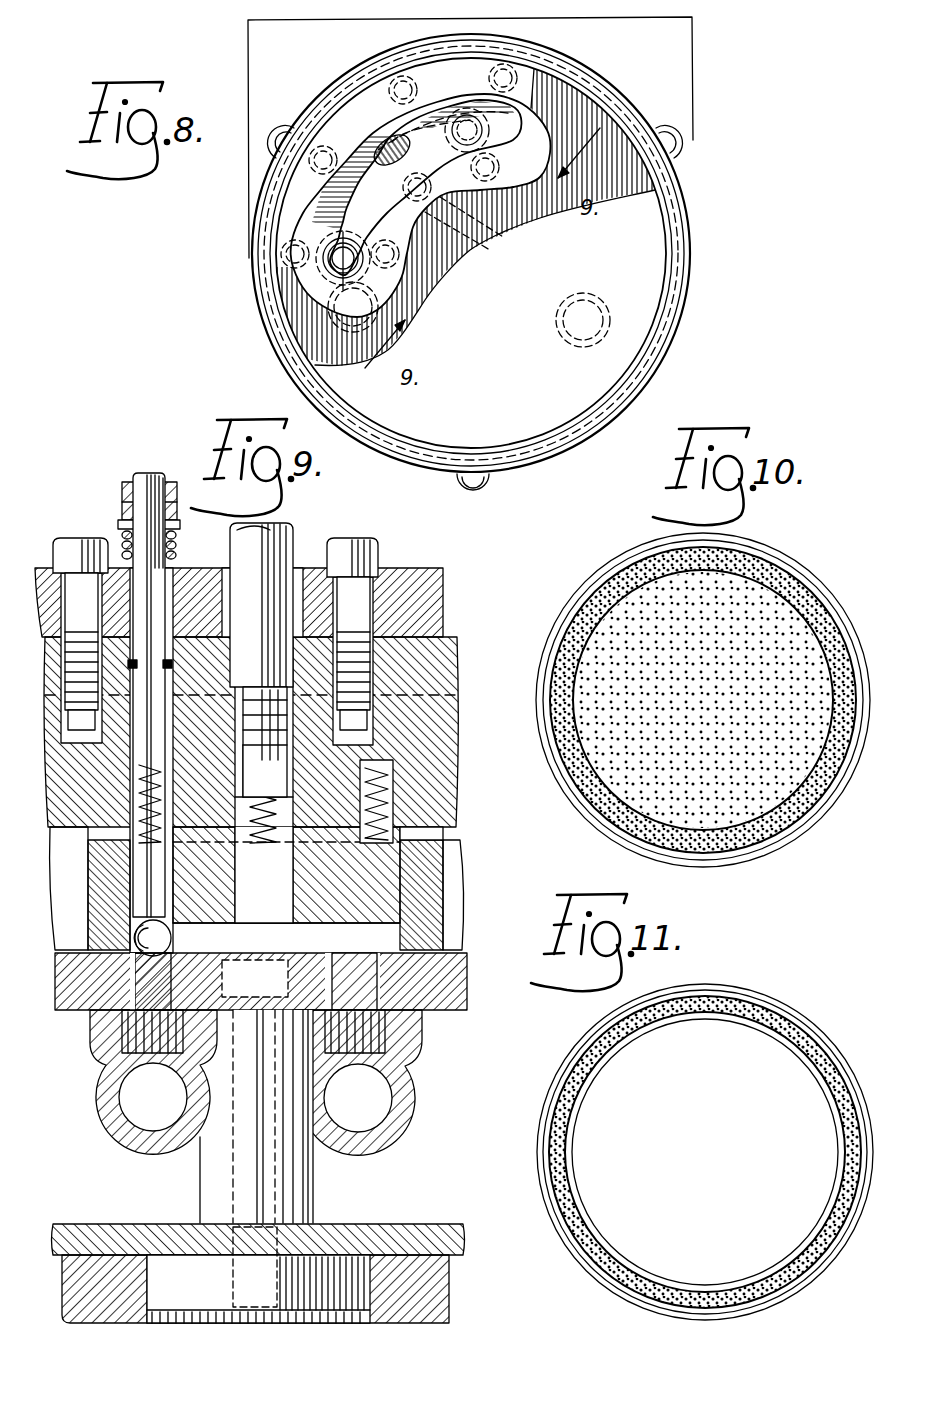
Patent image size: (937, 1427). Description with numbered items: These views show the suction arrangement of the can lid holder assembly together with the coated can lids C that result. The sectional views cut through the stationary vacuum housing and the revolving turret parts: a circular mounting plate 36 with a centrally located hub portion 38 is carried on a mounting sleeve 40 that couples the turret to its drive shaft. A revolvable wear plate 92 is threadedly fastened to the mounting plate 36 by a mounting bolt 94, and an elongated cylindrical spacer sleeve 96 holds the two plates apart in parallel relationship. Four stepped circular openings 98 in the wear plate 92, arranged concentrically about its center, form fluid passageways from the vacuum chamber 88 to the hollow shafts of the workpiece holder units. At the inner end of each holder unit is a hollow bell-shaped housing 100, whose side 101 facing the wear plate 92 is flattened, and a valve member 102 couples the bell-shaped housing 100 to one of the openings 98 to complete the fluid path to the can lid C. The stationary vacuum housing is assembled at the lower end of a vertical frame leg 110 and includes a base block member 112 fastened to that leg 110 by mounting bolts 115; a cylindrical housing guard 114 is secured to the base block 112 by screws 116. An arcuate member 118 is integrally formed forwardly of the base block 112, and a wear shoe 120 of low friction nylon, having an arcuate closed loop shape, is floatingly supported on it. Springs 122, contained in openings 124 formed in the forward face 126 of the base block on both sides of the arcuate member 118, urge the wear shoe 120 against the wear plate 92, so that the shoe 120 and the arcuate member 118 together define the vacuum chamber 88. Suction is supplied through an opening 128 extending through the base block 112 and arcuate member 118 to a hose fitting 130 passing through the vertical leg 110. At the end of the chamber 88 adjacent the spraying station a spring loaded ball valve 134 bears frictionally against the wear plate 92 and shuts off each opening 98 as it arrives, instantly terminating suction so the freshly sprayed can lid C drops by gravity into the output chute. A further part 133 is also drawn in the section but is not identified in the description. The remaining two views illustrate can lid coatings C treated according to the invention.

In FIG. 9, the circular mounting plate 36 is at (435, 1240).
In FIG. 9, the hub portion 38 is at (168, 1282).
In FIG. 9, the mounting sleeve 40 is at (435, 1285).
In FIG. 8, the vacuum chamber 88 is at (498, 140).
In FIG. 9, the vacuum chamber 88 is at (395, 1010).
In FIG. 9, the wear plate 92 is at (455, 978).
In FIG. 9, the mounting bolt 94 is at (270, 1175).
In FIG. 9, the spacer sleeve 96 is at (310, 1208).
In FIG. 9, the stepped circular openings 98 is at (248, 942).
In FIG. 9, the bell-shaped housing 100 is at (117, 1128).
In FIG. 9, the flattened side 101 is at (390, 1015).
In FIG. 9, the valve member 102 is at (130, 1046).
In FIG. 8, the vertical leg 110 is at (680, 63).
In FIG. 9, the vertical leg 110 is at (408, 575).
In FIG. 8, the base block member 112 is at (522, 389).
In FIG. 9, the base block member 112 is at (440, 672).
In FIG. 8, the cylindrical housing guard 114 is at (385, 305).
In FIG. 9, the cylindrical housing guard 114 is at (75, 540).
In FIG. 8, the mounting bolts 115 is at (655, 356).
In FIG. 9, the mounting bolts 115 is at (455, 852).
In FIG. 8, the screws 116 is at (278, 128).
In FIG. 8, the arcuate member 118 is at (335, 208).
In FIG. 9, the arcuate member 118 is at (385, 898).
In FIG. 8, the wear shoe member 120 is at (540, 107).
In FIG. 9, the wear shoe member 120 is at (432, 928).
In FIG. 8, the springs 122 is at (500, 80).
In FIG. 9, the springs 122 is at (330, 806).
In FIG. 8, the openings 124 is at (445, 213).
In FIG. 9, the openings 124 is at (265, 833).
In FIG. 9, the forward face 126 is at (445, 835).
In FIG. 8, the opening 128 is at (387, 143).
In FIG. 9, the opening 128 is at (290, 752).
In FIG. 9, the hose fitting 130 is at (290, 543).
In FIG. 9, the stem 133 is at (212, 577).
In FIG. 8, the spring loaded ball valve 134 is at (325, 246).
In FIG. 9, the spring loaded ball valve 134 is at (132, 985).
In FIG. 10, the can lid C is at (790, 573).
In FIG. 11, the can lid C is at (785, 1000).